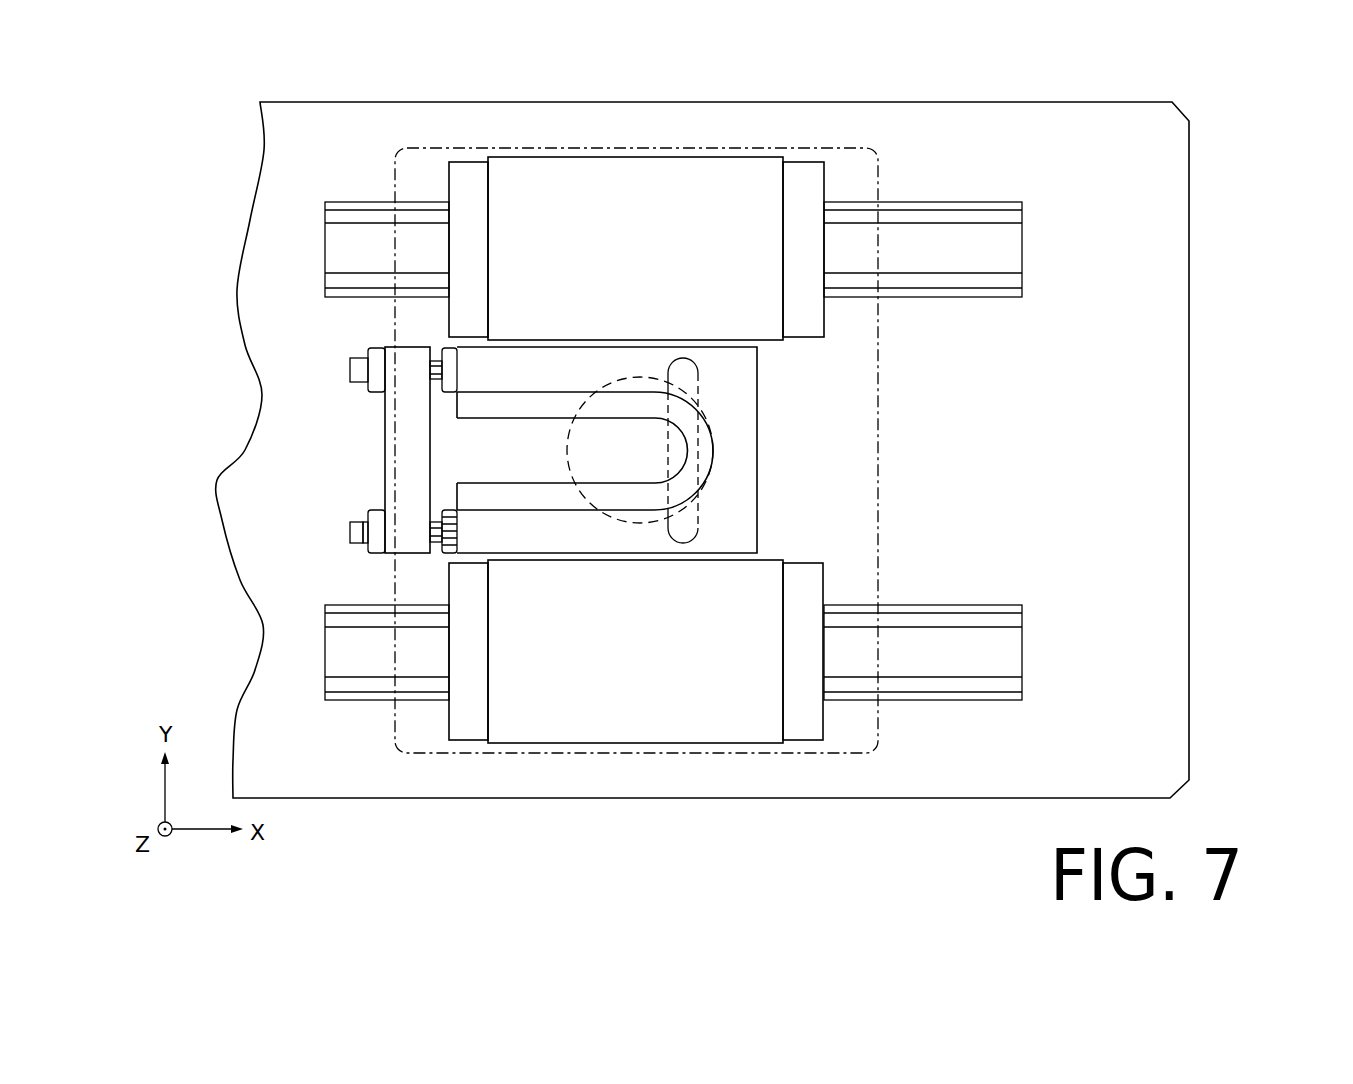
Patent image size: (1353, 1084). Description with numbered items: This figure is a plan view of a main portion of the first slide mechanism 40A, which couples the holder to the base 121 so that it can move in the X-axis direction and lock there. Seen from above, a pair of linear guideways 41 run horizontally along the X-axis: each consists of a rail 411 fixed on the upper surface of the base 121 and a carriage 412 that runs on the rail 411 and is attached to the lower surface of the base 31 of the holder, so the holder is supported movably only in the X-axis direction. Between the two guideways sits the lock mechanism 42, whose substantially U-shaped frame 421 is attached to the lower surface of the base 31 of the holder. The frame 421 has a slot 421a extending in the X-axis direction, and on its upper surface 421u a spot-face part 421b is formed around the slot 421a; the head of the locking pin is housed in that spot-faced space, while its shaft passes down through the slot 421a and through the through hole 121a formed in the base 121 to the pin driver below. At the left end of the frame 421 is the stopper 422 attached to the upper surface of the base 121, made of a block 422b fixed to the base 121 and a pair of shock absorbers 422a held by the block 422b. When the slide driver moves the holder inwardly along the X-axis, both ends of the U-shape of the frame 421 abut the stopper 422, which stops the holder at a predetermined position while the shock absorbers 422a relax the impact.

The first slide mechanism 40A is at (1206, 161).
The base 121 is at (1189, 335).
The through hole 121a is at (641, 512).
The base of the holder 31 is at (878, 375).
The linear guideway 41 is at (1280, 497).
The rail 411 is at (1023, 653).
The carriage 412 is at (823, 587).
The lock mechanism 42 is at (331, 345).
The frame 421 is at (760, 487).
The slot 421a is at (478, 483).
The spot-face part 421b is at (523, 503).
The upper surface of the frame 421u is at (727, 530).
The stopper 422 is at (140, 522).
The shock absorbers 422a is at (348, 531).
The block 422b is at (382, 491).